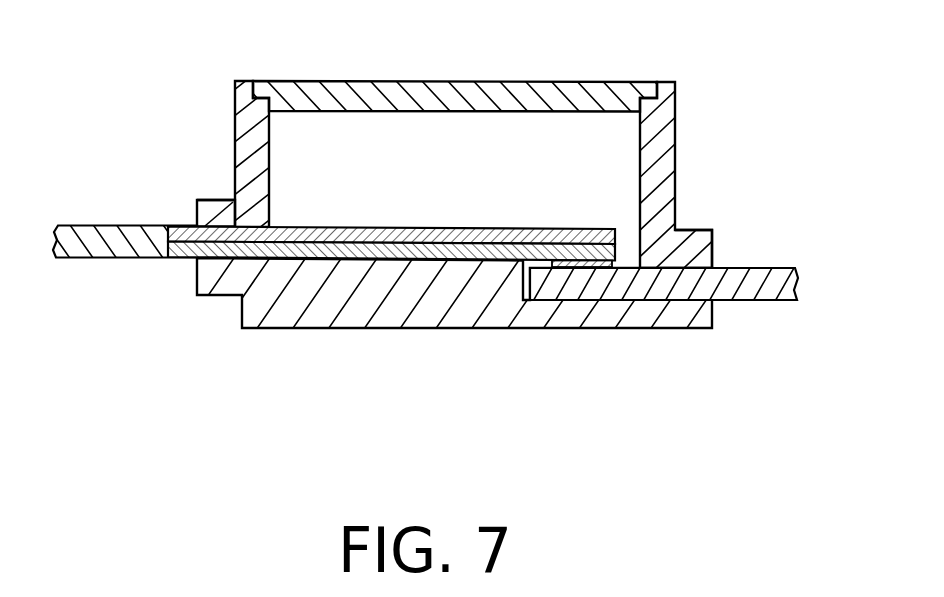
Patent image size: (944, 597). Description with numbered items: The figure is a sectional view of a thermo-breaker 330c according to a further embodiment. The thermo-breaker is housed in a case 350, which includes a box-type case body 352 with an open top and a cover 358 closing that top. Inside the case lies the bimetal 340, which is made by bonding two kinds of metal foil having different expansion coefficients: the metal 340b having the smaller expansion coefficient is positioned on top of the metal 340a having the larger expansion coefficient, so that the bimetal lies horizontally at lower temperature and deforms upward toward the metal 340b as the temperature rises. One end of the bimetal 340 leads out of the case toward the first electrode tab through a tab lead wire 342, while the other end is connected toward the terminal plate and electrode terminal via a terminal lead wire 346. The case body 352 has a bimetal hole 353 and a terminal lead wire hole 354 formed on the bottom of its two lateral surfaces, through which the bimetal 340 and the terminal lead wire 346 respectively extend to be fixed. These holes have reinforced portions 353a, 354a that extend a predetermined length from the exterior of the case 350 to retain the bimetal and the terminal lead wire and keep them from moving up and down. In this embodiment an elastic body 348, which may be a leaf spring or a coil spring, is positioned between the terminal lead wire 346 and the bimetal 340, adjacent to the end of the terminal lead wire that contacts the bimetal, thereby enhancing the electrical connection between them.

The thermo-breaker 330c is at (484, 166).
The bimetal 340 is at (391, 338).
The metal having a larger expansion coefficient 340a is at (387, 243).
The metal having a smaller expansion coefficient 340b is at (283, 250).
The tab lead wire 342 is at (88, 257).
The terminal lead wire 346 is at (743, 302).
The elastic body 348 is at (573, 265).
The case 350 is at (270, 117).
The case body 352 is at (243, 128).
The bimetal hole 353 is at (213, 212).
The reinforced portion 353a is at (217, 203).
The terminal lead wire hole 354 is at (548, 204).
The reinforced portion 354a is at (700, 230).
The cover 358 is at (284, 89).